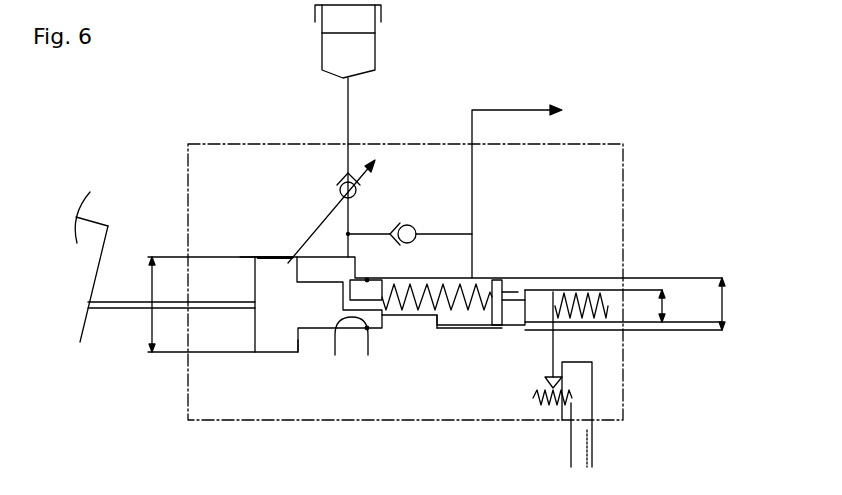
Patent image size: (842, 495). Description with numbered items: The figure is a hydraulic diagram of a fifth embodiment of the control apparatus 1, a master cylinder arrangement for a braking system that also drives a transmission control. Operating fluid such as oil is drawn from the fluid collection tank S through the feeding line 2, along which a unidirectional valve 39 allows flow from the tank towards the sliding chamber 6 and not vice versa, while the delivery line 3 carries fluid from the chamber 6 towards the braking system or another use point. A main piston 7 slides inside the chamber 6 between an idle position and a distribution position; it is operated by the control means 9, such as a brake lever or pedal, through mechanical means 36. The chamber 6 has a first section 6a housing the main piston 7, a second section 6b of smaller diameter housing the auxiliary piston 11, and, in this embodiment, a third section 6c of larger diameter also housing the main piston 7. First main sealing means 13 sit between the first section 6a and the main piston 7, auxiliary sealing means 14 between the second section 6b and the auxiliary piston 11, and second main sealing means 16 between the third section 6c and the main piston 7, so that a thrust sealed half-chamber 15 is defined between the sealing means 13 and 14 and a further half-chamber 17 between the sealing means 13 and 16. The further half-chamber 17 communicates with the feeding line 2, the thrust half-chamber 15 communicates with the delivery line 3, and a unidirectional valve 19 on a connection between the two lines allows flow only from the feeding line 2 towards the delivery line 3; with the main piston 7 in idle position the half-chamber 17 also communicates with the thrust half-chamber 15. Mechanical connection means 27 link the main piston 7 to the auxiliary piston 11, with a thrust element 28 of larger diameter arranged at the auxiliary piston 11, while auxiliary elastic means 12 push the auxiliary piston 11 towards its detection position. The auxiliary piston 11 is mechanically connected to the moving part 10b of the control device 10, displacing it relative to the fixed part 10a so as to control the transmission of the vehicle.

The apparatus 1 is at (206, 134).
The feeding line 2 is at (347, 112).
The delivery line 3 is at (500, 110).
The fluid collection tank S is at (348, 50).
The sliding chamber 6 is at (457, 318).
The first section 6a is at (310, 336).
The second section 6b is at (518, 292).
The third section 6c is at (258, 258).
The main piston 7 is at (258, 334).
The control means 9 is at (107, 223).
The control device 10 is at (606, 384).
The fixed part 10a is at (593, 433).
The moving part 10b is at (557, 348).
The auxiliary piston 11 is at (517, 305).
The auxiliary elastic means 12 is at (577, 292).
The first main sealing means 13 is at (337, 340).
The auxiliary sealing means 14 is at (527, 290).
The thrust sealed half-chamber 15 is at (400, 320).
The second main sealing means 16 is at (281, 256).
The further half-chamber 17 is at (306, 337).
The unidirectional valve 19 is at (407, 229).
The mechanical connection means 27 is at (436, 355).
The thrust element 28 is at (500, 312).
The mechanical means 36 is at (117, 309).
The unidirectional valve 39 is at (341, 185).